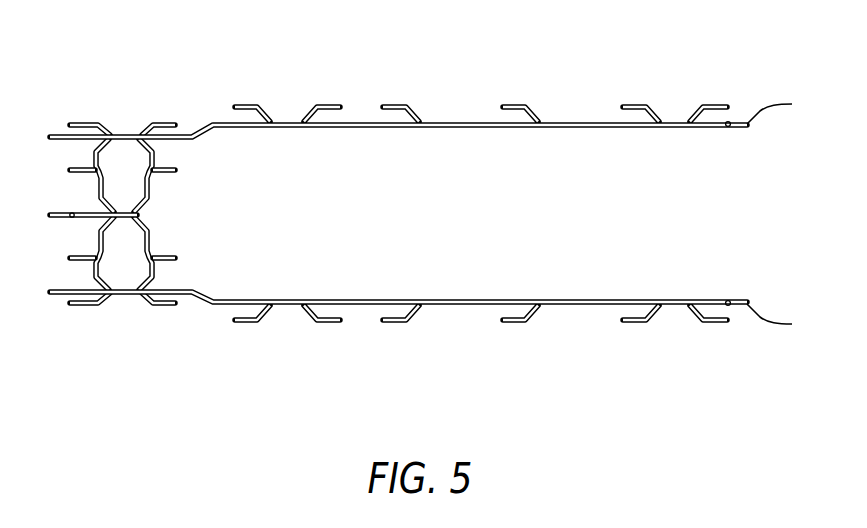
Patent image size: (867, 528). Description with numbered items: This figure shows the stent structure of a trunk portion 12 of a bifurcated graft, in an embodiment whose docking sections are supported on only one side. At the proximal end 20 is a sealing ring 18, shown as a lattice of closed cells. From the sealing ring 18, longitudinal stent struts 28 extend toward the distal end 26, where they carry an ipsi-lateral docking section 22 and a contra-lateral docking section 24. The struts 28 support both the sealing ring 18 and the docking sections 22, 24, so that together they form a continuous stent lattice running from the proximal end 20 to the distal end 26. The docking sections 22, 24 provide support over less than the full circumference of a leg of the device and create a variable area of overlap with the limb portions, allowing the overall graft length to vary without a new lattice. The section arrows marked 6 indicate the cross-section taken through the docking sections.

The proximal end 20 is at (39, 88).
The trunk portion 12 is at (120, 333).
The sealing ring 18 is at (107, 133).
The ipsi-lateral docking section 22 is at (237, 375).
The contra-lateral docking section 24 is at (237, 33).
The distal end 26 is at (816, 334).
The longitudinal stent struts 28 is at (72, 217).
The section line for FIG. 6 is at (552, 110).